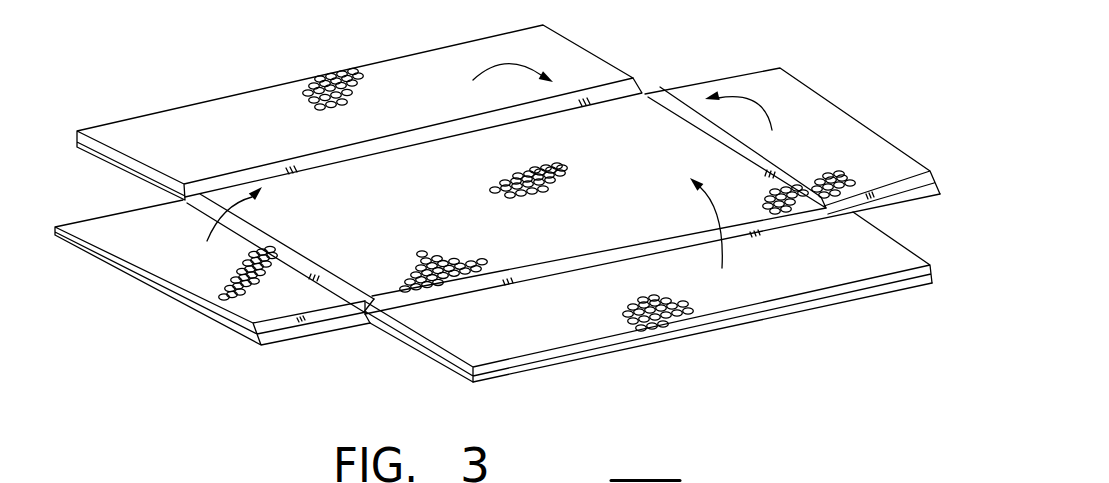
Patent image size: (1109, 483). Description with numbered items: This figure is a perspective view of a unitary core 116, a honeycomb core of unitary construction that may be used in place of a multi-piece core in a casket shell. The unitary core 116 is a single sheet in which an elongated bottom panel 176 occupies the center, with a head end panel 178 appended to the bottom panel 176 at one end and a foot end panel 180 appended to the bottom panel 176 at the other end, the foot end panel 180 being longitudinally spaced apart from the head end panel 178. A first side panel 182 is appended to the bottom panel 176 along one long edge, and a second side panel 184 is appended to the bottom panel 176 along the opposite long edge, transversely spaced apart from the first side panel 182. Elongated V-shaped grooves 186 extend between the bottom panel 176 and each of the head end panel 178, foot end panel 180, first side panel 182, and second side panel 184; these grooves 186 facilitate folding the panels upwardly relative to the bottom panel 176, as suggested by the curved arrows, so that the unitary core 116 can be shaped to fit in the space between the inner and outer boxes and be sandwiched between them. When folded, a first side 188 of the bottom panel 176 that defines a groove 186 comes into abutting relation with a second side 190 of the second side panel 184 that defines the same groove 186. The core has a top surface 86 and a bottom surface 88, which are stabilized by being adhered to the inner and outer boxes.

The unitary core 116 is at (925, 88).
The bottom panel 176 is at (373, 222).
The head end panel 178 is at (182, 260).
The foot end panel 180 is at (825, 128).
The first side panel 182 is at (390, 108).
The second side panel 184 is at (755, 283).
The V-shaped grooves 186 is at (664, 85).
The first side of bottom panel 188 is at (375, 305).
The second side of side panel 190 is at (362, 325).
The top surface of core 86 is at (610, 140).
The bottom surface of core 88 is at (506, 393).